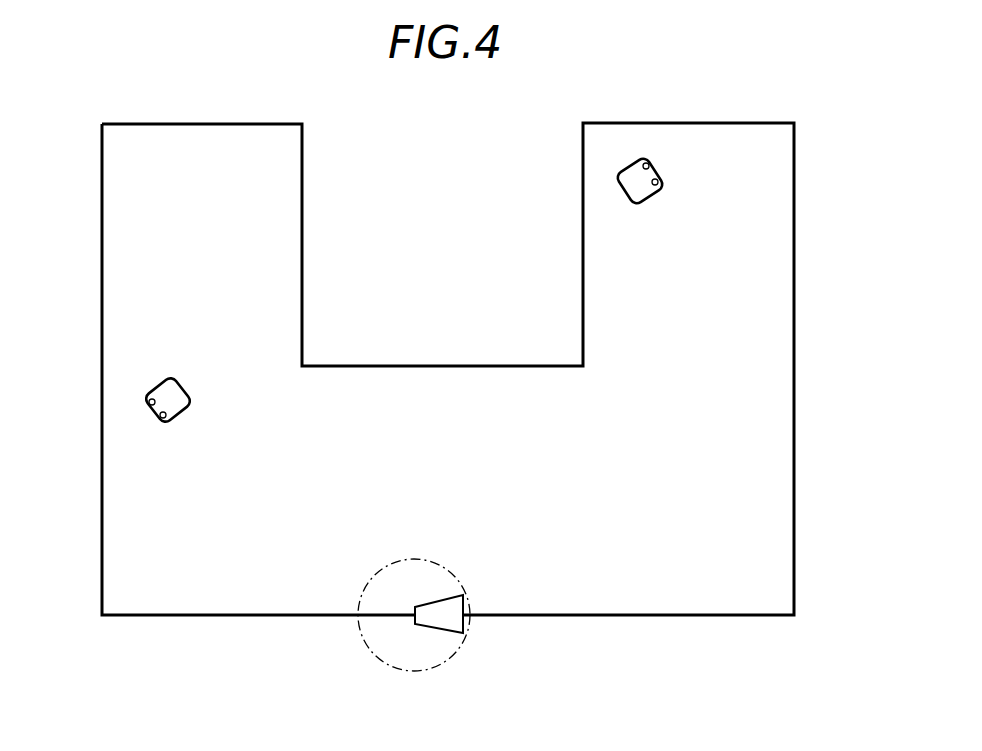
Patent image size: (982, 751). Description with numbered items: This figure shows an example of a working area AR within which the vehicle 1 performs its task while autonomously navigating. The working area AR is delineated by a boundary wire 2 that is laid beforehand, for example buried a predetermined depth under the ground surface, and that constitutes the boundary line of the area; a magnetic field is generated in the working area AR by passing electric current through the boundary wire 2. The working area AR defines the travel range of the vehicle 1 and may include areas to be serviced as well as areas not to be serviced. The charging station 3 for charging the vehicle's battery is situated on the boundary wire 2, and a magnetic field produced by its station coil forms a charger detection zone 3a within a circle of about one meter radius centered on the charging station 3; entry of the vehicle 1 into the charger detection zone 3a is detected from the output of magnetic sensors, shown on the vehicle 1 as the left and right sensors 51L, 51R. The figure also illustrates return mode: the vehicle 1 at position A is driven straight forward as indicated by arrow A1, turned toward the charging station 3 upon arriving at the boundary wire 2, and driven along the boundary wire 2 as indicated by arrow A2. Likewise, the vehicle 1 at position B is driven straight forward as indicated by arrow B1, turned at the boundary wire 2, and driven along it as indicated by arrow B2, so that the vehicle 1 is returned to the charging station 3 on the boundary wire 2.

The vehicle 1 is at (617, 178).
The boundary wire 2 is at (794, 449).
The charging station 3 is at (443, 633).
The charger detection zone 3a is at (401, 672).
The left boundary sensor 51L is at (644, 164).
The right boundary sensor 51R is at (663, 168).
The working area AR is at (755, 270).
The position A is at (206, 378).
The arrow A1 is at (142, 418).
The arrow A2 is at (90, 457).
The position B is at (637, 140).
The arrow B1 is at (664, 172).
The arrow B2 is at (753, 115).